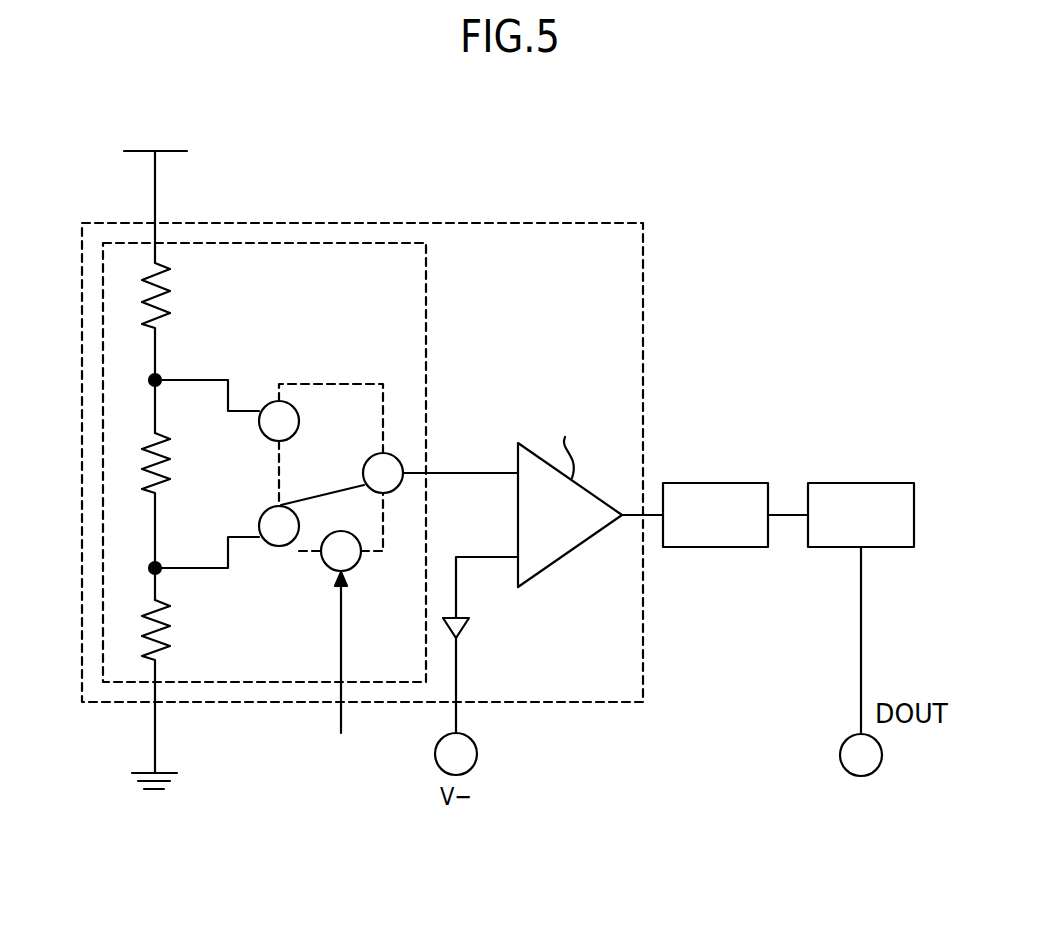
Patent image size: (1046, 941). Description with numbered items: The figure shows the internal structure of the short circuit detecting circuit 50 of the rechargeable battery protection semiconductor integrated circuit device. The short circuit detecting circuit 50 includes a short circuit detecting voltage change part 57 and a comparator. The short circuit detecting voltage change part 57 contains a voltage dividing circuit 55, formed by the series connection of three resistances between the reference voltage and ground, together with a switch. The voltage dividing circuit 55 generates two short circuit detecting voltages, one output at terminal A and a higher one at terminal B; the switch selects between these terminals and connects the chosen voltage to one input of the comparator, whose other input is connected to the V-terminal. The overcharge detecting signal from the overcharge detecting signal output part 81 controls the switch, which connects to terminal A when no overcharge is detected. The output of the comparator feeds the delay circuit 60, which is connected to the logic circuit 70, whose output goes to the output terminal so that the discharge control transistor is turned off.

The short circuit detecting circuit 50 is at (644, 259).
The voltage dividing circuit 55 is at (120, 266).
The short circuit detecting voltage change part 57 is at (427, 279).
The delay circuit 60 is at (717, 483).
The logic circuit 70 is at (861, 483).
The overcharge detecting signal output part 81 is at (340, 612).